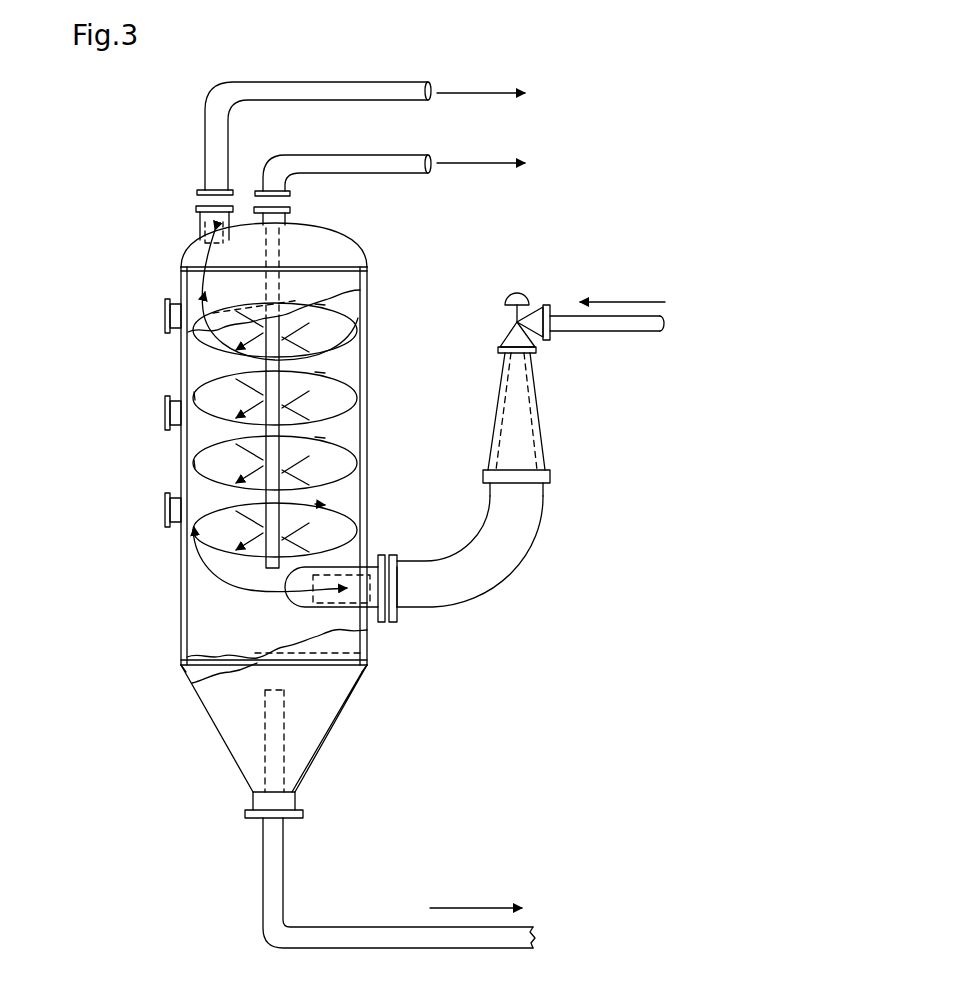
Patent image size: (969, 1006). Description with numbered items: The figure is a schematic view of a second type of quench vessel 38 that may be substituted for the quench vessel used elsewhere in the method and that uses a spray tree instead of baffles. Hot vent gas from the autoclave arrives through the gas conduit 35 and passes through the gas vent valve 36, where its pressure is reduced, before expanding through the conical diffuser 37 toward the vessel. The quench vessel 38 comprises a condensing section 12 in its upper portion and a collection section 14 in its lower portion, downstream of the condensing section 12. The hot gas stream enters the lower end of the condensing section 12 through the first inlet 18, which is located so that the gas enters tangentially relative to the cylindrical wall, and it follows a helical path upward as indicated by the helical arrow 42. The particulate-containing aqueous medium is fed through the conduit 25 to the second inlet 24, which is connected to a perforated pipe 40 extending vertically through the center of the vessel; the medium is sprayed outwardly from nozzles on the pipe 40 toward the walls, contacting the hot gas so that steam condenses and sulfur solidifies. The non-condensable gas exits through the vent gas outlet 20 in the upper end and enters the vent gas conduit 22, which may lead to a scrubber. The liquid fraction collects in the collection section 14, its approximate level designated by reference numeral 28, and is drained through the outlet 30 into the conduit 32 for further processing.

The condensing section 12 is at (368, 376).
The collection section 14 is at (345, 705).
The first inlet 18 is at (372, 608).
The vent gas outlet 20 is at (200, 220).
The vent gas conduit 22 is at (290, 82).
The second inlet 24 is at (292, 222).
The conduit 25 is at (340, 155).
The level of collected liquid fraction 28 is at (372, 657).
The outlet 30 is at (303, 812).
The conduit 32 is at (284, 858).
The gas conduit 35 is at (598, 334).
The gas vent valve 36 is at (525, 297).
The conical diffuser 37 is at (530, 408).
The quench vessel 38 is at (168, 470).
The perforated pipe 40 is at (363, 330).
The helical arrow 42 is at (362, 435).